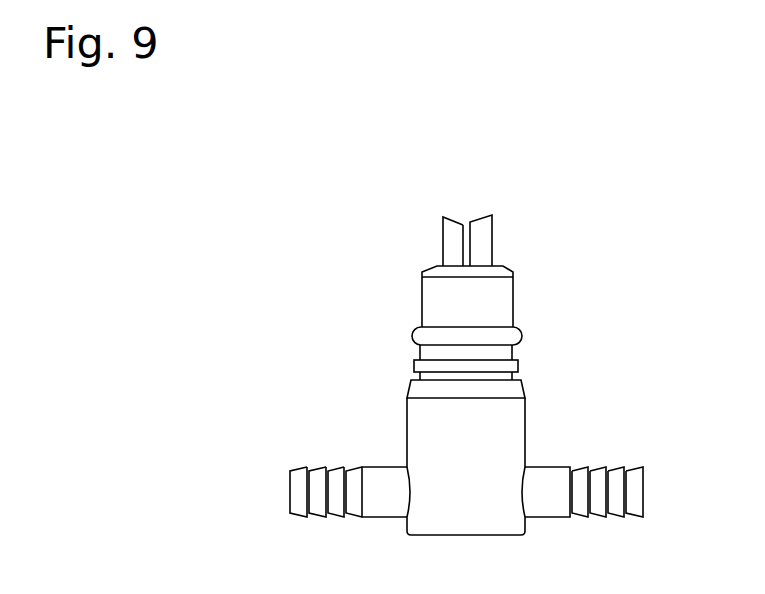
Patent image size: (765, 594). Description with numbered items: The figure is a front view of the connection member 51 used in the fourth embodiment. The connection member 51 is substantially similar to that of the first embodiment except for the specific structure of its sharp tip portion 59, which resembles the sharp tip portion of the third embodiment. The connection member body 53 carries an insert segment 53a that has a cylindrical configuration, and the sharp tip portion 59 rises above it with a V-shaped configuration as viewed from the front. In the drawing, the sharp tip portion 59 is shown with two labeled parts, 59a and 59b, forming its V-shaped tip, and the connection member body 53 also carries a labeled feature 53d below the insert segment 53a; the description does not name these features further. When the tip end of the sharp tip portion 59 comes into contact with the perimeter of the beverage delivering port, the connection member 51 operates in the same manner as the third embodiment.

The connection member 51 is at (590, 232).
The connection member body 53 is at (522, 413).
The insert segment 53a is at (505, 298).
The annular rib 53d is at (413, 342).
The sharp tip portion 59 is at (475, 222).
The slit 59a is at (465, 243).
The projecting piece 59b is at (445, 248).